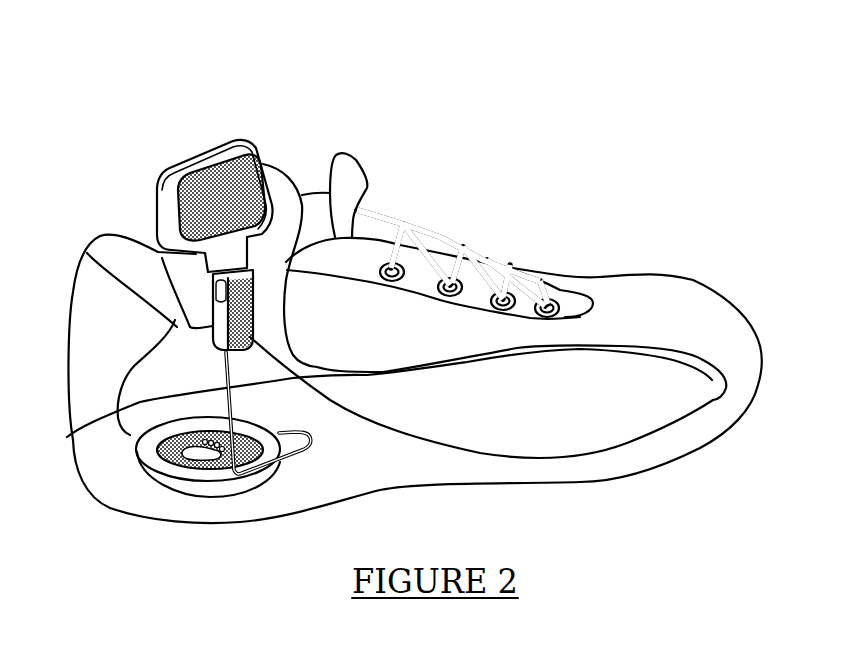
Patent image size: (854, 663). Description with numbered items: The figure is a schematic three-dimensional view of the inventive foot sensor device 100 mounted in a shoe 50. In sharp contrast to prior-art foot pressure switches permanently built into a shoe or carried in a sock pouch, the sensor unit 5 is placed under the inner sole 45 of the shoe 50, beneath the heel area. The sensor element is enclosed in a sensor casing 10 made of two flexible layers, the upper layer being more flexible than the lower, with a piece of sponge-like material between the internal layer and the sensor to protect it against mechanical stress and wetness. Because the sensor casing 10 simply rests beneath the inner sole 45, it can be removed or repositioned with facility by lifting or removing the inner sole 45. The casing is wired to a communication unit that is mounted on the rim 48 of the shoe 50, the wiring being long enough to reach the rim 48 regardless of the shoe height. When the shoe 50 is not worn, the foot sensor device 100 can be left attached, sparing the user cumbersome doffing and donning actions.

The sensor unit 5 is at (112, 466).
The sensor casing 10 is at (187, 482).
The inner sole 45 is at (343, 388).
The rim 48 is at (160, 252).
The shoe 50 is at (637, 295).
The foot sensor device 100 is at (190, 130).